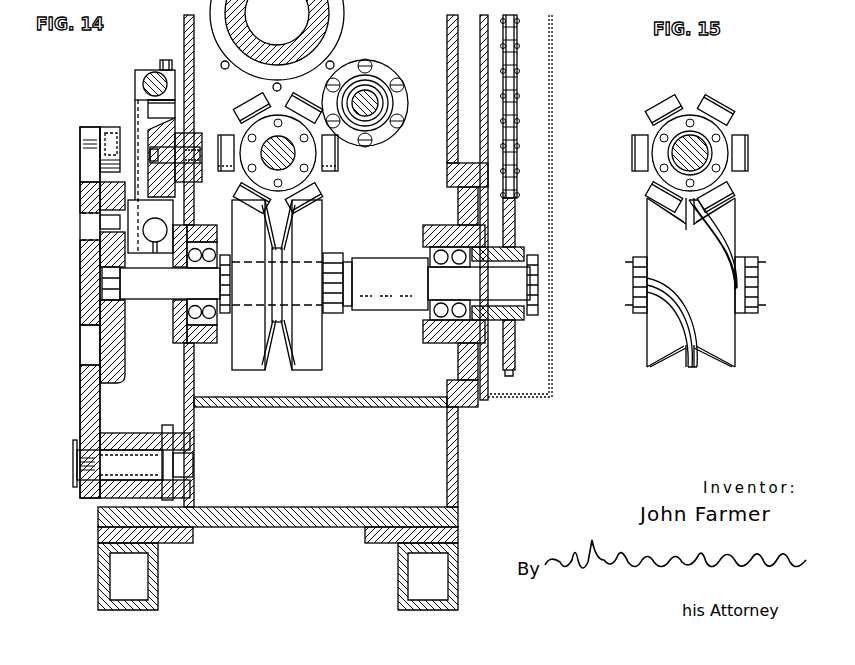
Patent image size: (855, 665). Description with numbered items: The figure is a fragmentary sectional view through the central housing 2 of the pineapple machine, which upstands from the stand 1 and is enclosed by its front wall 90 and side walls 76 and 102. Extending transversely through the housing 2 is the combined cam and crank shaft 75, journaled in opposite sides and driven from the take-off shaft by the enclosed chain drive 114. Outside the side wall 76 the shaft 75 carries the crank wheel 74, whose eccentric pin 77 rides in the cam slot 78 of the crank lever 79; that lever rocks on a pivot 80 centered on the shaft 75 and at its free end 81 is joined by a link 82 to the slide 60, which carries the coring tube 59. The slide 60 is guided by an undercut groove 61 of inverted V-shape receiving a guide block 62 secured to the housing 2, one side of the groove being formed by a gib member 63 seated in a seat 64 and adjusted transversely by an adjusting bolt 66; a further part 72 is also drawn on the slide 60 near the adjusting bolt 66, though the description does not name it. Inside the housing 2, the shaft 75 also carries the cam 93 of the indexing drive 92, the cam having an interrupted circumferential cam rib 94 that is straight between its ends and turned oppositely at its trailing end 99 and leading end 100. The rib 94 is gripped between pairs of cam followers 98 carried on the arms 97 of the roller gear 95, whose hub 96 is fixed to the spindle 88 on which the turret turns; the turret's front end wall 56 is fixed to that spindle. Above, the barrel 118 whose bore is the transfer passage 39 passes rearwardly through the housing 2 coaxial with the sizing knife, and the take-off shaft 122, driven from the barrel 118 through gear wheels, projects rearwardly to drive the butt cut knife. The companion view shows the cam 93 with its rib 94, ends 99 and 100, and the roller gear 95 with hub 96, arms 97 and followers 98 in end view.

In FIG. 14, the stand 1 is at (98, 573).
In FIG. 14, the housing 2 is at (458, 462).
In FIG. 14, the transfer passage 39 is at (285, 25).
In FIG. 14, the front end wall 56 is at (88, 338).
In FIG. 14, the coring tube 59 is at (157, 217).
In FIG. 14, the slide 60 is at (135, 80).
In FIG. 14, the undercut groove 61 is at (168, 176).
In FIG. 14, the guide block 62 is at (148, 172).
In FIG. 14, the gib member 63 is at (167, 117).
In FIG. 14, the seat 64 is at (148, 102).
In FIG. 14, the adjusting bolt 66 is at (162, 62).
In FIG. 14, the rod 72 is at (152, 73).
In FIG. 14, the crank wheel 74 is at (125, 361).
In FIG. 14, the shaft 75 is at (381, 258).
In FIG. 14, the side wall 76 is at (184, 42).
In FIG. 14, the eccentric pin 77 is at (82, 223).
In FIG. 14, the cam slot 78 is at (82, 201).
In FIG. 14, the crank lever 79 is at (80, 272).
In FIG. 14, the pivot 80 is at (127, 447).
In FIG. 14, the free end 81 is at (90, 126).
In FIG. 14, the link 82 is at (110, 127).
In FIG. 14, the spindle 88 is at (280, 168).
In FIG. 14, the front wall 90 is at (419, 42).
In FIG. 14, the indexing drive 92 is at (295, 285).
In FIG. 15, the indexing drive 92 is at (678, 282).
In FIG. 14, the cam 93 is at (322, 342).
In FIG. 15, the cam 93 is at (737, 218).
In FIG. 14, the cam rib 94 is at (284, 234).
In FIG. 15, the cam rib 94 is at (675, 300).
In FIG. 14, the roller gear 95 is at (246, 101).
In FIG. 15, the roller gear 95 is at (723, 98).
In FIG. 14, the hub 96 is at (240, 177).
In FIG. 15, the hub 96 is at (727, 132).
In FIG. 14, the arms 97 is at (312, 90).
In FIG. 15, the arms 97 is at (663, 100).
In FIG. 14, the cam followers 98 is at (236, 125).
In FIG. 15, the cam followers 98 is at (690, 100).
In FIG. 15, the trailing end 99 is at (713, 261).
In FIG. 15, the leading end 100 is at (664, 312).
In FIG. 14, the side wall 102 is at (447, 52).
In FIG. 14, the chain drive 114 is at (518, 16).
In FIG. 14, the barrel 118 is at (323, 30).
In FIG. 14, the take-off shaft 122 is at (385, 103).